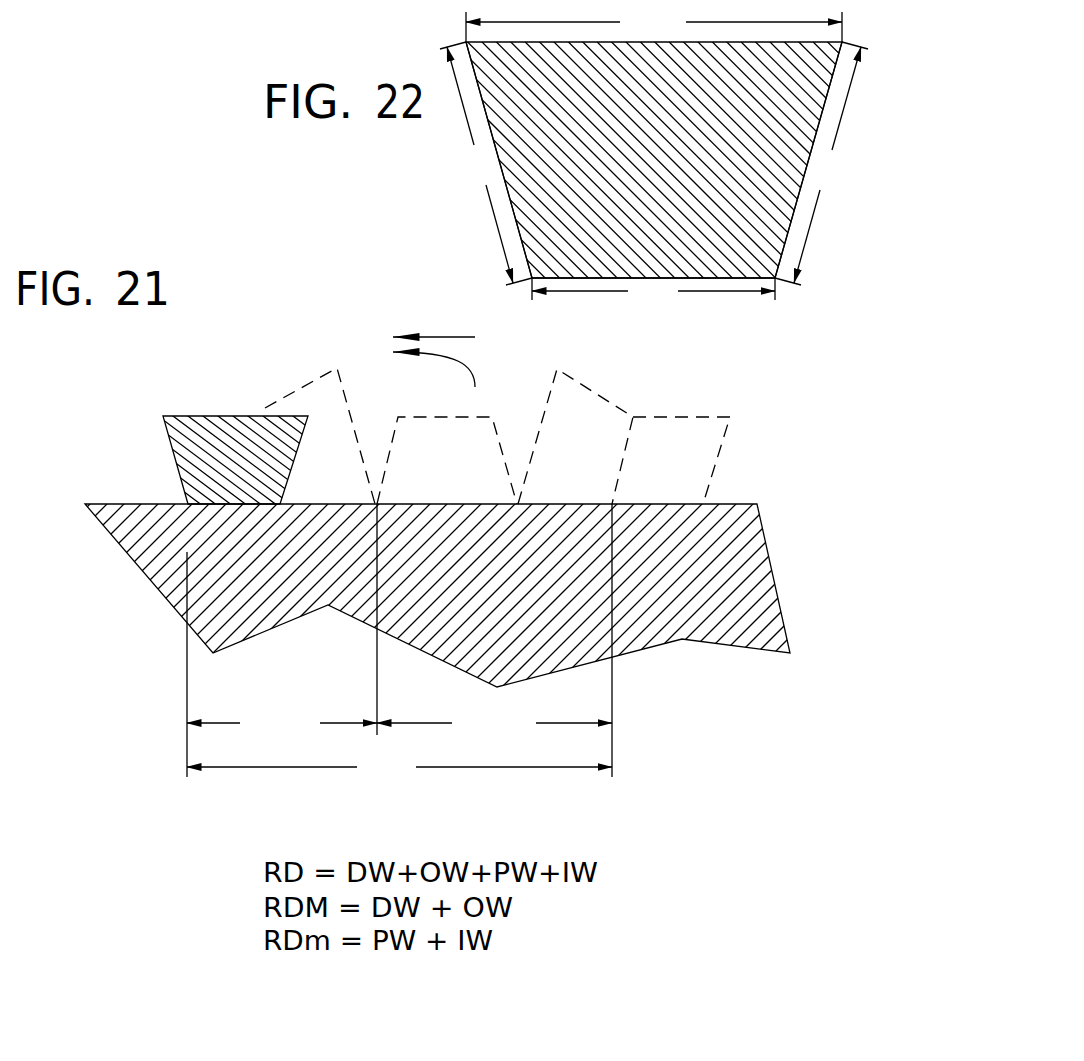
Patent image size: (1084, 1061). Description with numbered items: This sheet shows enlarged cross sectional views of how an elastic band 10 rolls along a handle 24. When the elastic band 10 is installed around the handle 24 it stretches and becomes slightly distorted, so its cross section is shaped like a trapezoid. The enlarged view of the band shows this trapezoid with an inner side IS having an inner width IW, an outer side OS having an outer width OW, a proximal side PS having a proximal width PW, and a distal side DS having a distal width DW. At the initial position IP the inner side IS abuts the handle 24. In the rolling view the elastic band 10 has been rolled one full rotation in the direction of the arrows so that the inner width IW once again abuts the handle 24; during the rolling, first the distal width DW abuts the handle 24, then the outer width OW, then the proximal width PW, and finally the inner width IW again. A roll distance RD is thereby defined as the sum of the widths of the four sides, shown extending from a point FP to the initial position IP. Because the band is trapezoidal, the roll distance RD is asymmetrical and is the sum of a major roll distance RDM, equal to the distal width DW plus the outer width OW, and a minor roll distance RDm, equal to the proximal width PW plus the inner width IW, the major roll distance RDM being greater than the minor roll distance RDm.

In FIG. 21, the elastic band 10 is at (133, 403).
In FIG. 21, the handle 24 is at (742, 505).
In FIG. 22, the outer width OW is at (654, 24).
In FIG. 21, the outer width OW is at (447, 460).
In FIG. 22, the inner width IW is at (653, 294).
In FIG. 21, the inner width IW is at (231, 483).
In FIG. 22, the distal width DW is at (485, 163).
In FIG. 21, the distal width DW is at (575, 436).
In FIG. 22, the proximal width PW is at (821, 163).
In FIG. 21, the proximal width PW is at (320, 436).
In FIG. 22, the outer side OS is at (658, 43).
In FIG. 22, the inner side IS is at (643, 277).
In FIG. 22, the distal side DS is at (507, 178).
In FIG. 22, the proximal side PS is at (802, 176).
In FIG. 21, the roll distance RD is at (399, 767).
In FIG. 21, the major roll distance RDM is at (494, 722).
In FIG. 21, the minor roll distance RDm is at (282, 722).
In FIG. 21, the first point FP is at (189, 808).
In FIG. 21, the initial position IP is at (614, 798).